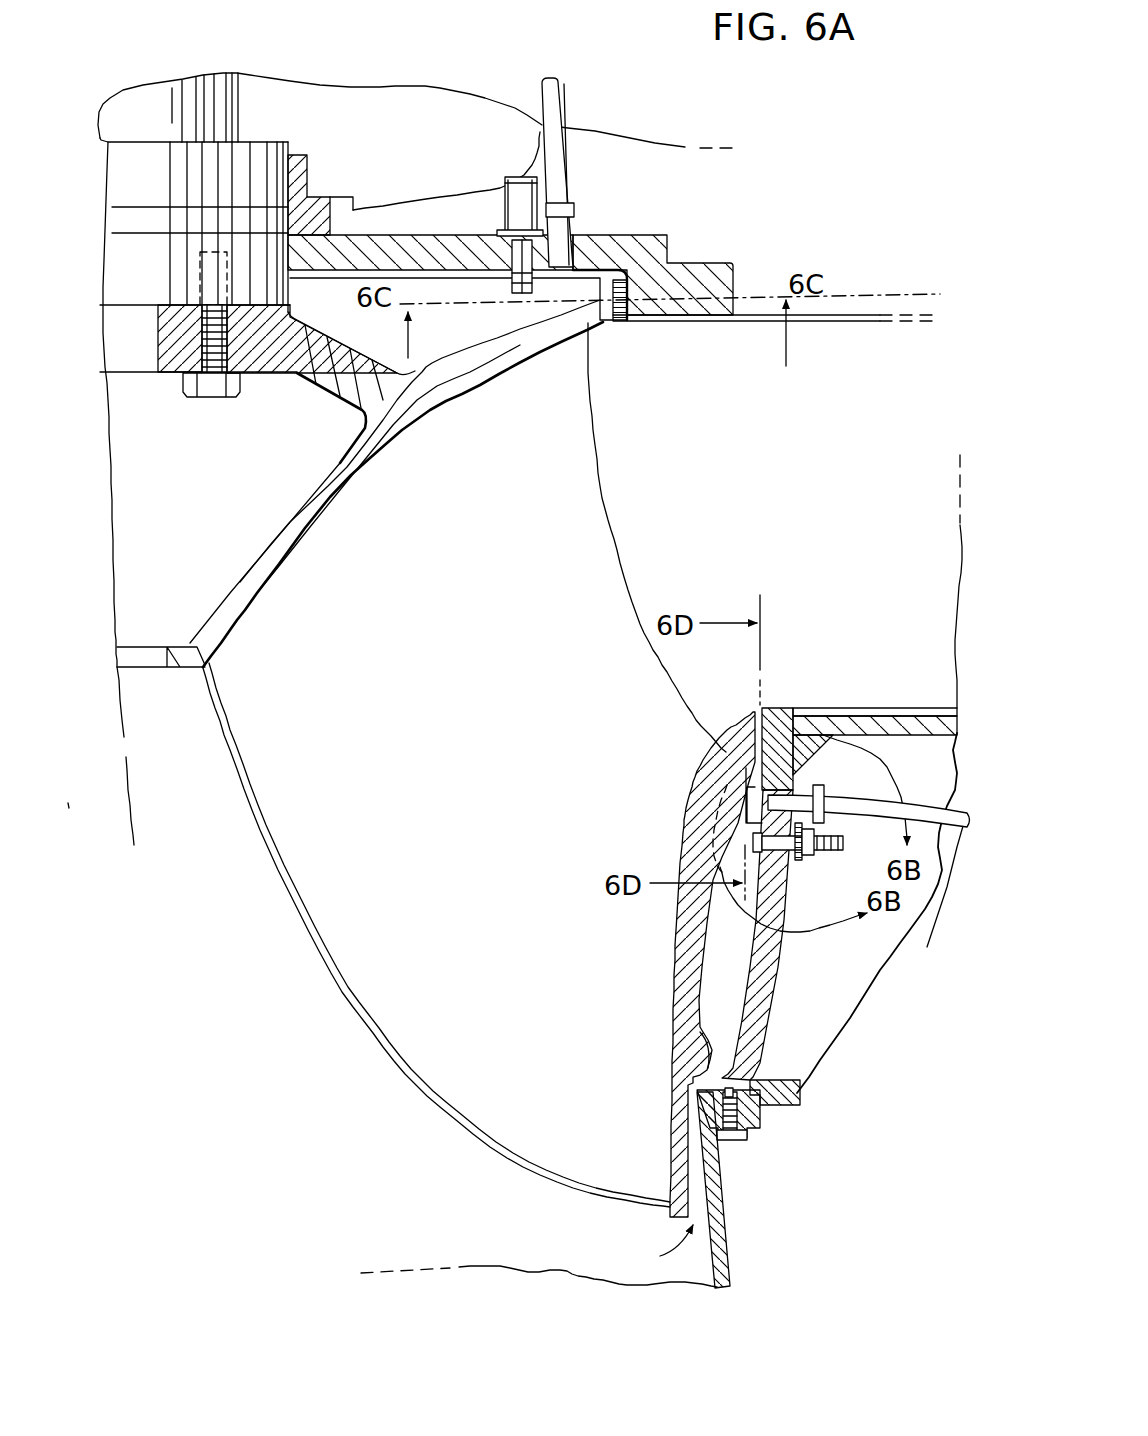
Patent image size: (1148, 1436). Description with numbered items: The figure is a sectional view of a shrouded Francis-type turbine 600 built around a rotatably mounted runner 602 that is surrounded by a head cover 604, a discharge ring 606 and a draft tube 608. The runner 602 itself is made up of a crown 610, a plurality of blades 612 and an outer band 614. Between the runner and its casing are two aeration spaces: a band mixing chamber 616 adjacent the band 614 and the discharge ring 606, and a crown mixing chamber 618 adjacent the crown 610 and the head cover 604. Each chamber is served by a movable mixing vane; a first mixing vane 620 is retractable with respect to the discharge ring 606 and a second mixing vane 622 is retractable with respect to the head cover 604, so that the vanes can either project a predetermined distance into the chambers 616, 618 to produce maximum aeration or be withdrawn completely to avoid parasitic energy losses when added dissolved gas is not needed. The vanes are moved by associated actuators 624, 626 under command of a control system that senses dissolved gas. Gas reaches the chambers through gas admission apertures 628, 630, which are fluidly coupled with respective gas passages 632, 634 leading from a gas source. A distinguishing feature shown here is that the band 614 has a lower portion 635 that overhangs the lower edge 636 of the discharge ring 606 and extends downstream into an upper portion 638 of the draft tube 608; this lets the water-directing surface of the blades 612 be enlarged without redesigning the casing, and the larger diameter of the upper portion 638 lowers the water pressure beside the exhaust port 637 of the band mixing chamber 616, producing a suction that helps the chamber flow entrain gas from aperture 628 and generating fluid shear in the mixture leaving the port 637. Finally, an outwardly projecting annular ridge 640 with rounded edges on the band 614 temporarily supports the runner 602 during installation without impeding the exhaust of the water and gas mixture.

The shrouded turbine 600 is at (716, 176).
The runner 602 is at (186, 690).
The head cover 604 is at (658, 258).
The discharge ring 606 is at (766, 1014).
The draft tube 608 is at (728, 1238).
The crown 610 is at (483, 377).
The blades 612 is at (622, 546).
The band 614 is at (671, 972).
The band mixing chamber 616 is at (745, 964).
The crown mixing chamber 618 is at (385, 344).
The mixing vane 620 is at (753, 841).
The mixing vane 622 is at (512, 290).
The actuator 624 is at (828, 857).
The actuator 626 is at (505, 195).
The gas admission aperture 628 is at (768, 803).
The gas admission aperture 630 is at (557, 280).
The gas passage 632 is at (880, 774).
The gas passage 634 is at (567, 106).
The lower portion of band 635 is at (671, 1141).
The lower edge of discharge ring 636 is at (693, 1097).
The exhaust port 637 is at (652, 1247).
The upper portion of draft tube 638 is at (720, 1177).
The annular ridge 640 is at (703, 1047).